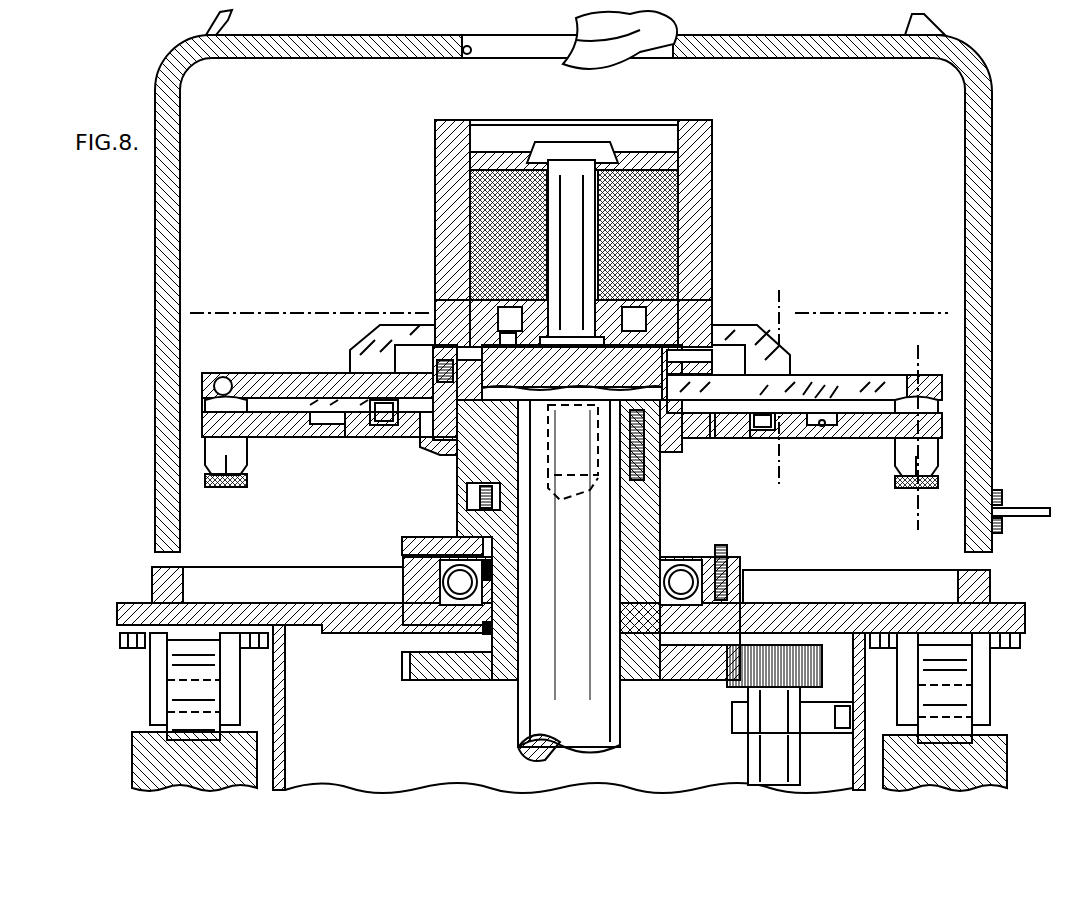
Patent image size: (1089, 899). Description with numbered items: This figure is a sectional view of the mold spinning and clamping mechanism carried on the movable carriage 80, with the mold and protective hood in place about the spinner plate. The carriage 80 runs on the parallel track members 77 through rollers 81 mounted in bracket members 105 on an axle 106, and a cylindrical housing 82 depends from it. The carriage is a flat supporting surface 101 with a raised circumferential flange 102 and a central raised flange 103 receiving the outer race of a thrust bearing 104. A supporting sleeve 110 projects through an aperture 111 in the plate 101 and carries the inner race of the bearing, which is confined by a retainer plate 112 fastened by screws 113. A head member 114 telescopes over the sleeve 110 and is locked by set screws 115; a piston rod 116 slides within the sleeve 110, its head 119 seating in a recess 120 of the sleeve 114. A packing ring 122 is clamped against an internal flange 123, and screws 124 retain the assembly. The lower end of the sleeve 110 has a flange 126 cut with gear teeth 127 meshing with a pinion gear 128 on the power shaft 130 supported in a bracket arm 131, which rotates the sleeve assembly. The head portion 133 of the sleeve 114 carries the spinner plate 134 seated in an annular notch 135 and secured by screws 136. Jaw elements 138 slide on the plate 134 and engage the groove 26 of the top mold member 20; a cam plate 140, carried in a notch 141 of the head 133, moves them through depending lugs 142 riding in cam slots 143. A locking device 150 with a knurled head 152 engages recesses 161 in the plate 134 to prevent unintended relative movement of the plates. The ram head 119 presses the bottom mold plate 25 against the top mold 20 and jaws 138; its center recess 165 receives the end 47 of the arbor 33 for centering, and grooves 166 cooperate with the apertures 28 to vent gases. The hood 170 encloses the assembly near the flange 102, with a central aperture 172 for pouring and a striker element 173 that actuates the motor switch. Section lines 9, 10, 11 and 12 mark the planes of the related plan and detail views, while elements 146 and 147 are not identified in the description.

The section line 9 is at (205, 311).
The section line 10 is at (188, 399).
The section line 11 is at (640, 240).
The section line 12 is at (940, 354).
The top mold member 20 is at (712, 170).
The bottom mold plate 25 is at (470, 330).
The mold groove 26 is at (690, 340).
The annular recess 28 is at (508, 332).
The arbor 33 is at (572, 285).
The end of arbor 47 is at (573, 440).
The track members 77 is at (140, 757).
The carriage 80 is at (150, 578).
The rollers 81 is at (185, 656).
The cylindrical housing 82 is at (285, 722).
The flat supporting surface 101 is at (316, 608).
The raised circumferential flange 102 is at (178, 578).
The central raised flange 103 is at (403, 582).
The thrust bearing 104 is at (458, 580).
The supporting bracket members 105 is at (158, 710).
The axle 106 is at (160, 680).
The supporting sleeve 110 is at (650, 524).
The aperture 111 is at (485, 628).
The retainer plate 112 is at (700, 540).
The screws 113 is at (727, 552).
The head member 114 is at (655, 500).
The set screws 115 is at (467, 493).
The piston rod 116 is at (525, 708).
The head 119 is at (690, 352).
The recess 120 is at (700, 366).
The packing ring 122 is at (500, 455).
The internal flange 123 is at (445, 448).
The screws 124 is at (665, 452).
The flange 126 is at (452, 680).
The gear teeth 127 is at (402, 672).
The pinion gear 128 is at (755, 672).
The power shaft 130 is at (762, 762).
The bracket arm 131 is at (732, 720).
The head portion 133 is at (408, 437).
The spinner plate 134 is at (282, 380).
The annular notch 135 is at (696, 425).
The screws 136 is at (455, 380).
The clamping members 138 is at (415, 318).
The cam plate 140 is at (300, 437).
The face recess 141 is at (730, 438).
The depending lugs 142 is at (383, 425).
The cam slots 143 is at (327, 425).
The glass plate 146 is at (850, 378).
The glass surface 147 is at (800, 386).
The locking device 150 is at (250, 462).
The knurled head 152 is at (228, 487).
The recesses 161 is at (226, 378).
The center recess 165 is at (569, 498).
The grooves 166 is at (700, 300).
The hood 170 is at (985, 186).
The central aperture 172 is at (466, 58).
The striker element 173 is at (1030, 507).